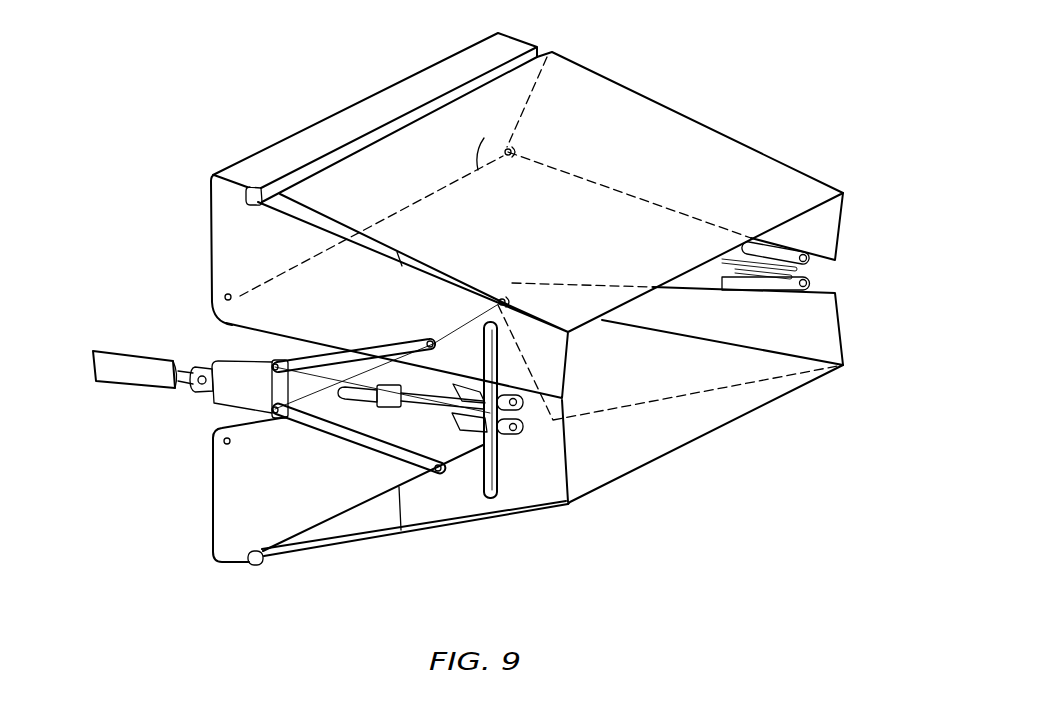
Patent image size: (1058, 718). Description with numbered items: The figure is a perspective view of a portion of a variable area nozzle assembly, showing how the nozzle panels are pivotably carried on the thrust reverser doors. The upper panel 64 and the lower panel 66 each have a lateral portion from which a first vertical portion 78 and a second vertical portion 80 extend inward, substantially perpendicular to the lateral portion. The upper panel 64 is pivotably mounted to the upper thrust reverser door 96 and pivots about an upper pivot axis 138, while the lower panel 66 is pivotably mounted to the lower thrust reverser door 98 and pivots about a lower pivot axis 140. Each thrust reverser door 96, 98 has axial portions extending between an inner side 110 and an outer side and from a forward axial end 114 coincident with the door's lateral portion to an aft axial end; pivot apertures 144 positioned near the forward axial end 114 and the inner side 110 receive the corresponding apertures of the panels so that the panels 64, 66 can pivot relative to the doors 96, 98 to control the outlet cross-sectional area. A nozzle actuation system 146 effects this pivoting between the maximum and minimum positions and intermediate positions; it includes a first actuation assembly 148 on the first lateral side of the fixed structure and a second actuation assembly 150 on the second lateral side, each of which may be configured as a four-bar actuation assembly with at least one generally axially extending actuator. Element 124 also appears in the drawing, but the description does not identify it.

The upper thrust reverser door 96 is at (397, 103).
The upper pivot axis 138 is at (512, 132).
The upper panel 64 is at (640, 160).
The pivot apertures 144 is at (538, 152).
The second vertical portion 80 is at (830, 215).
The second actuation assembly 150 is at (822, 275).
The forward axial end 114 is at (188, 240).
The inner side 110 is at (244, 334).
The actuator cylinder 124 is at (118, 399).
The lower thrust reverser door 98 is at (233, 540).
The first actuation assembly 148 is at (477, 482).
The nozzle actuation system 146 is at (507, 463).
The first vertical portion 78 is at (547, 472).
The lower panel 66 is at (645, 452).
The lower pivot axis 140 is at (540, 342).